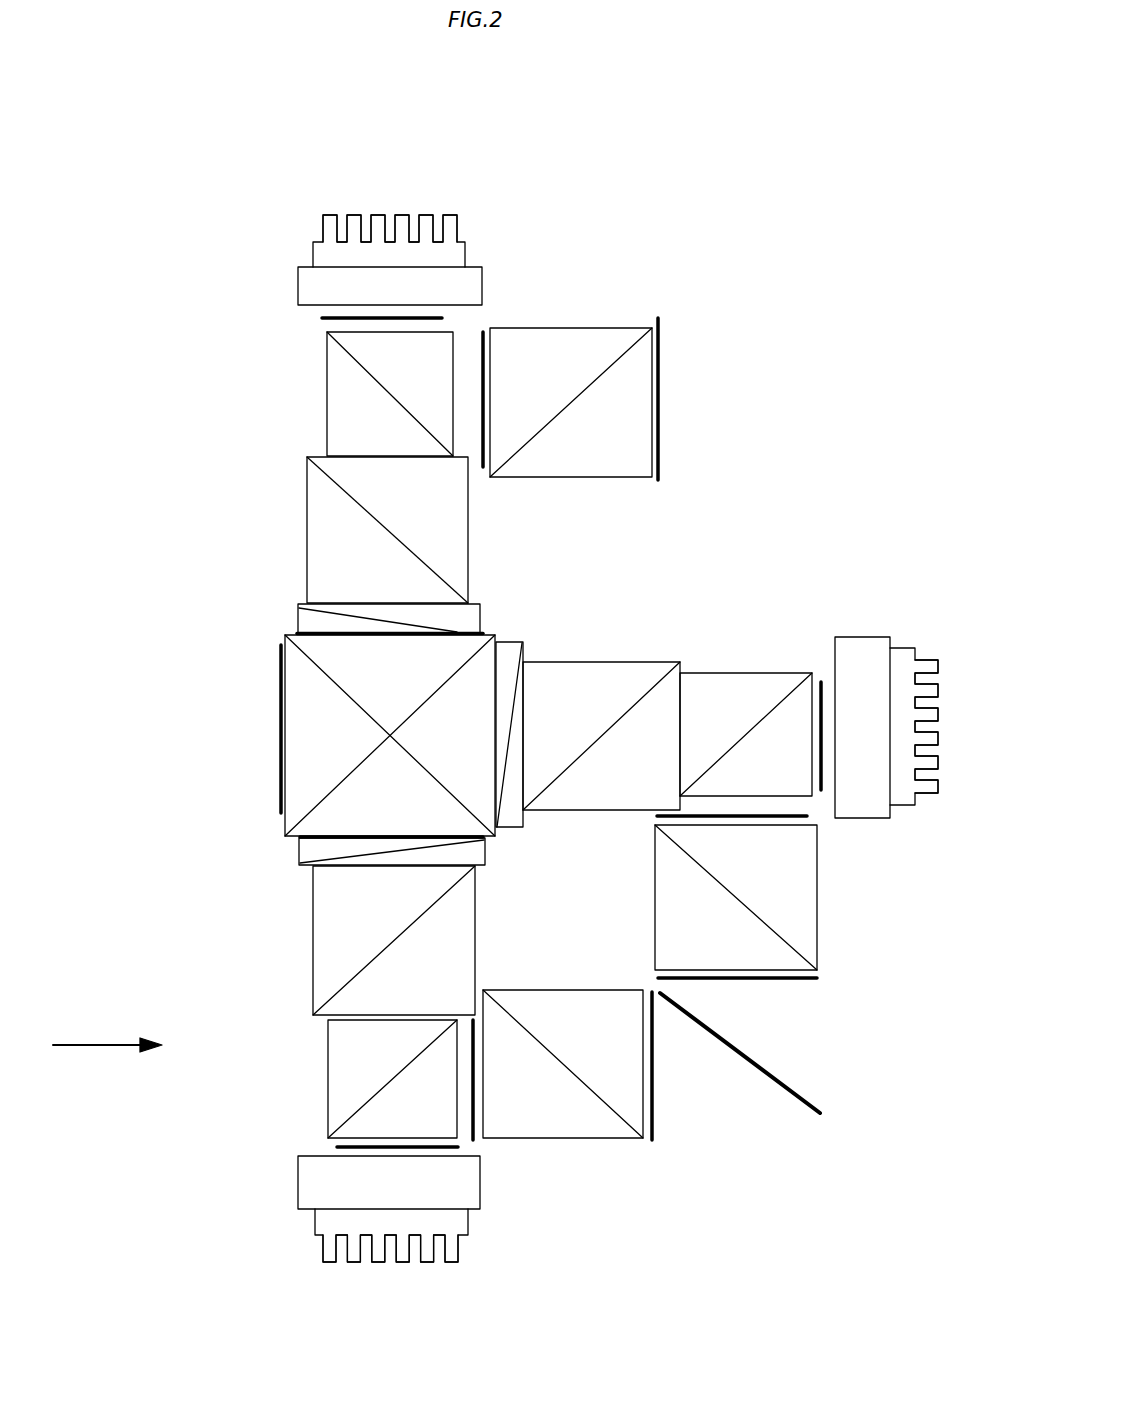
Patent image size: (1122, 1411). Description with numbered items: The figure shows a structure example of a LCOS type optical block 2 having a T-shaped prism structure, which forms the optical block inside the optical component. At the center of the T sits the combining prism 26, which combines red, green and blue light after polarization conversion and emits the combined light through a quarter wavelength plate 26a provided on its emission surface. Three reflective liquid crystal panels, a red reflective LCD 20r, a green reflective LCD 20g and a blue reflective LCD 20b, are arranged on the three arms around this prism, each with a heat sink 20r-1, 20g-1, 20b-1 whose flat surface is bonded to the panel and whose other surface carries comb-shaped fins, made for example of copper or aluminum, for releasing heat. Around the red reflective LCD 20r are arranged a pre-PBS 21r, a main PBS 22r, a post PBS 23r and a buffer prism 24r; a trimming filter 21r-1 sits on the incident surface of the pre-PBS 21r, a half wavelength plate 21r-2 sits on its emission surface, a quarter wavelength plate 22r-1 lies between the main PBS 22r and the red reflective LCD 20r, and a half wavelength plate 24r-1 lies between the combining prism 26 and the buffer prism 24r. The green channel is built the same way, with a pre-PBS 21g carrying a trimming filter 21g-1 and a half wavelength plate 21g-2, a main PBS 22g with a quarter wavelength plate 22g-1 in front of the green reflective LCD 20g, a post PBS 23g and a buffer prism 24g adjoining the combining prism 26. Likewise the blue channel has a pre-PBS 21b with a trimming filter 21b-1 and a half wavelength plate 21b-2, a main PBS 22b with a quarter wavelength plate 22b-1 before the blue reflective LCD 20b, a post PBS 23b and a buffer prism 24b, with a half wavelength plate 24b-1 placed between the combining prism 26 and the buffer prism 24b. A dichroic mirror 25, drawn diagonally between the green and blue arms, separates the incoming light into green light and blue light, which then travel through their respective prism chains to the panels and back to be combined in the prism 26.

The optical block 2 is at (427, 95).
The red reflective LCD 20r is at (480, 258).
The heat sink 20r-1 is at (330, 215).
The pre-PBS 21r is at (572, 328).
The trimming filter 21r-1 is at (660, 355).
The ½ wavelength plate 21r-2 is at (492, 320).
The main PBS 22r is at (327, 395).
The ¼ wavelength plate 22r-1 is at (320, 318).
The post PBS 23r is at (307, 505).
The buffer prism 24r is at (298, 618).
The ½ wavelength plate 24r-1 is at (480, 633).
The green reflective LCD 20g is at (838, 637).
The heat sink 20g-1 is at (905, 648).
The pre-PBS 21g is at (818, 930).
The trimming filter 21g-1 is at (798, 980).
The ½ wavelength plate 21g-2 is at (655, 818).
The main PBS 22g is at (745, 673).
The ¼ wavelength plate 22g-1 is at (824, 795).
The post PBS 23g is at (587, 662).
The buffer prism 24g is at (520, 640).
The blue reflective LCD 20b is at (297, 1190).
The heat sink 20b-1 is at (455, 1262).
The pre-PBS 21b is at (593, 1140).
The trimming filter 21b-1 is at (655, 1132).
The ½ wavelength plate 21b-2 is at (475, 1140).
The main PBS 22b is at (327, 1087).
The ¼ wavelength plate 22b-1 is at (340, 1147).
The post PBS 23b is at (313, 976).
The buffer prism 24b is at (323, 868).
The ½ wavelength plate 24b-1 is at (300, 840).
The dichroic mirror 25 is at (820, 1115).
The 4p prism 26 is at (285, 835).
The ¼ wavelength plate 26a is at (281, 748).